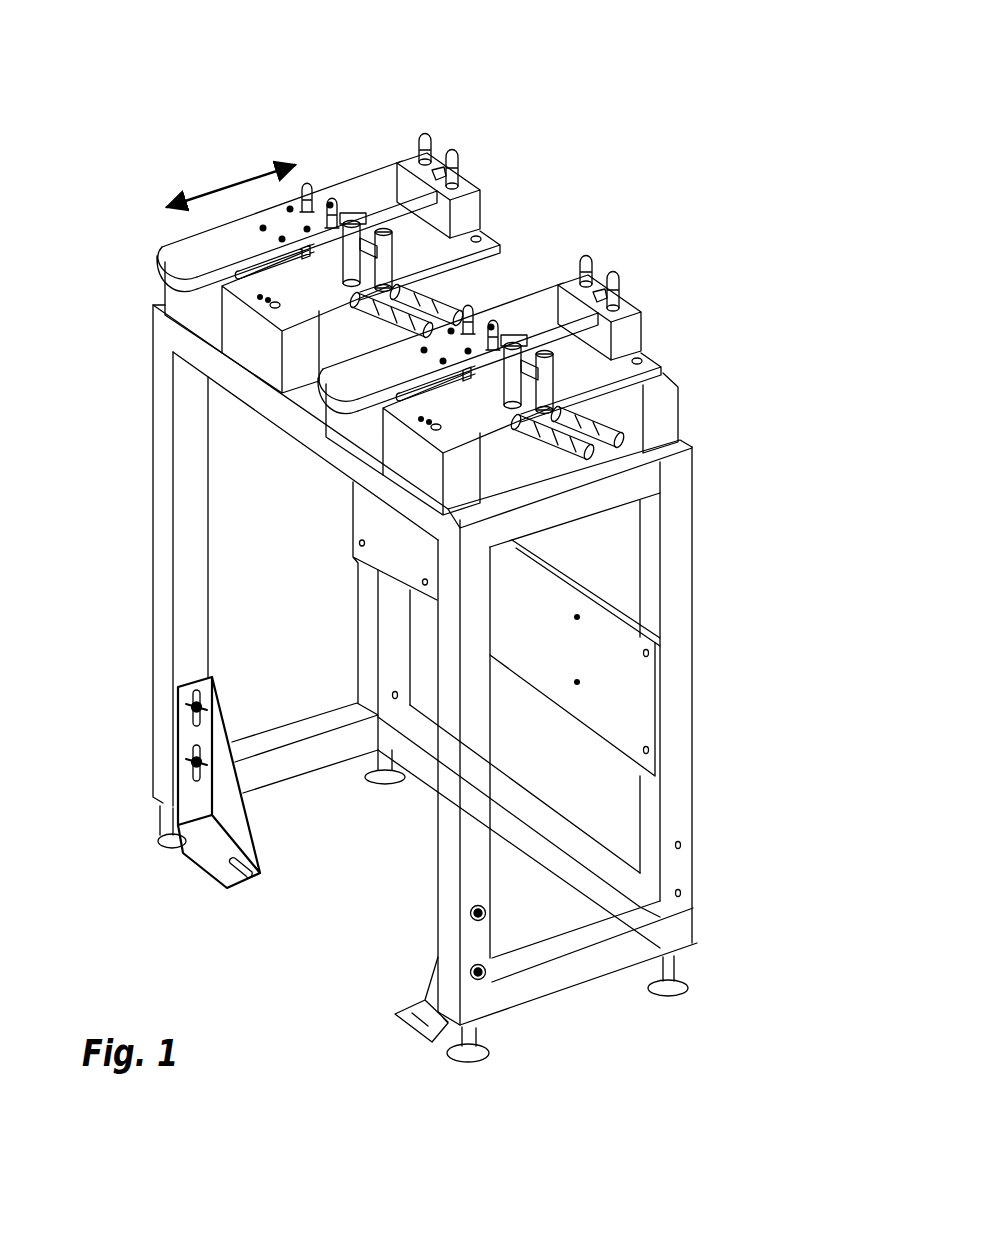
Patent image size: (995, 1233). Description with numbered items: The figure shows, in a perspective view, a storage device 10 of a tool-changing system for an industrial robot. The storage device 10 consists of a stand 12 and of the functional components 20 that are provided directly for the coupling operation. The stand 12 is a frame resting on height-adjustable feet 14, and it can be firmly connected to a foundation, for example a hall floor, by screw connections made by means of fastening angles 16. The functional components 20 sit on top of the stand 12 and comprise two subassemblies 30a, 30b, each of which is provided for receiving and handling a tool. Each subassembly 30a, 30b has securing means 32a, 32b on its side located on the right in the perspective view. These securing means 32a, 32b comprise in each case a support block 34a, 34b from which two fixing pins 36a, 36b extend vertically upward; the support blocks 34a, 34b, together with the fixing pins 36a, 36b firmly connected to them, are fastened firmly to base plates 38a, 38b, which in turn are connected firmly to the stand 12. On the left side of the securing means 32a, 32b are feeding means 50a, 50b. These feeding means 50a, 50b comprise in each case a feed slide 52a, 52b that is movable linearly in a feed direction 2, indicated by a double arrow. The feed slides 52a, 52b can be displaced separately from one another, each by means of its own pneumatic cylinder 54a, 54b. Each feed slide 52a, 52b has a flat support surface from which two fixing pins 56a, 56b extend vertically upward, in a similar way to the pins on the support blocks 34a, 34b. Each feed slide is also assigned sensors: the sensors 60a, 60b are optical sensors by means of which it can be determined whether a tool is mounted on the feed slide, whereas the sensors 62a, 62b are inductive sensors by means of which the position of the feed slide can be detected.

The storage device 10 is at (211, 117).
The feed direction 2 is at (205, 193).
The stand 12 is at (170, 344).
The height-adjustable feet 14 is at (171, 833).
The fastening angles 16 is at (195, 798).
The functional components 20 is at (585, 220).
The subassembly 30a is at (462, 193).
The subassembly 30b is at (668, 319).
The securing means 32a is at (412, 183).
The securing means 32b is at (605, 333).
The support block 34a is at (465, 210).
The support block 34b is at (638, 320).
The fixing pins 36a is at (431, 140).
The fixing pins 36b is at (590, 268).
The base plate 38a is at (487, 240).
The base plate 38b is at (650, 363).
The feeding means 50a is at (329, 278).
The feeding means 50b is at (426, 412).
The feed slide 52a is at (212, 232).
The feed slide 52b is at (368, 380).
The pneumatic cylinder 54a is at (200, 240).
The pneumatic cylinder 54b is at (428, 388).
The fixing pins 56a is at (365, 200).
The fixing pins 56b is at (460, 373).
The optical sensor 60a is at (372, 258).
The optical sensor 60b is at (560, 383).
The inductive sensor 62a is at (430, 306).
The inductive sensor 62b is at (600, 440).